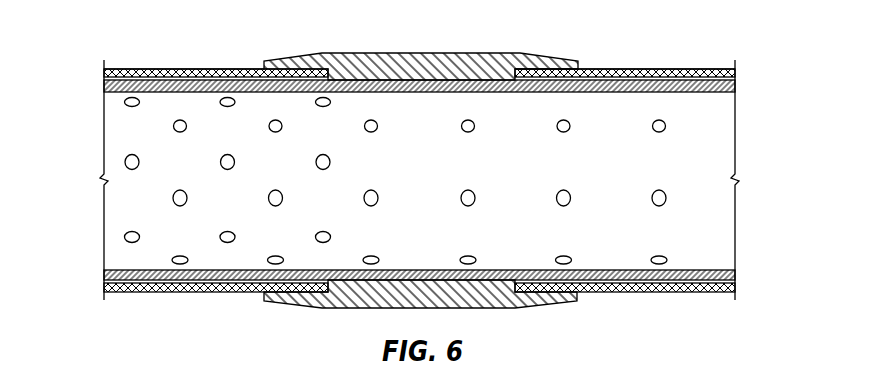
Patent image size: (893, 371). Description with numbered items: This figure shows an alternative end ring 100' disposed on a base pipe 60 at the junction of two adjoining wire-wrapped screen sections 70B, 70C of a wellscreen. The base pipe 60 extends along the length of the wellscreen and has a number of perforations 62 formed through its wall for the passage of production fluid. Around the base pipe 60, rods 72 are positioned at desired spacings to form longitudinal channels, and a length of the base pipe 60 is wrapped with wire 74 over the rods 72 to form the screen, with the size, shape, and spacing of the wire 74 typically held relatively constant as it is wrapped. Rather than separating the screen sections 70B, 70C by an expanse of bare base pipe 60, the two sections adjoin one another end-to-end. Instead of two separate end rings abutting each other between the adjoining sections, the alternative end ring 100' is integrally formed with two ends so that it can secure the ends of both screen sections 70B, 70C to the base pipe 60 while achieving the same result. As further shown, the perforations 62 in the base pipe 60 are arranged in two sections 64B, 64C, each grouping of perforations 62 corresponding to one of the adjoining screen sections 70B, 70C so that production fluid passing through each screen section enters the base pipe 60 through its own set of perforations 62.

The screen section 70B is at (121, 36).
The screen section 70C is at (716, 36).
The base pipe 60 is at (105, 86).
The rods 72 is at (104, 77).
The wire 74 is at (177, 69).
The alternative end ring 100' is at (421, 164).
The perforations 62 is at (179, 191).
The section of perforations 64B is at (298, 176).
The section of perforations 64C is at (635, 176).